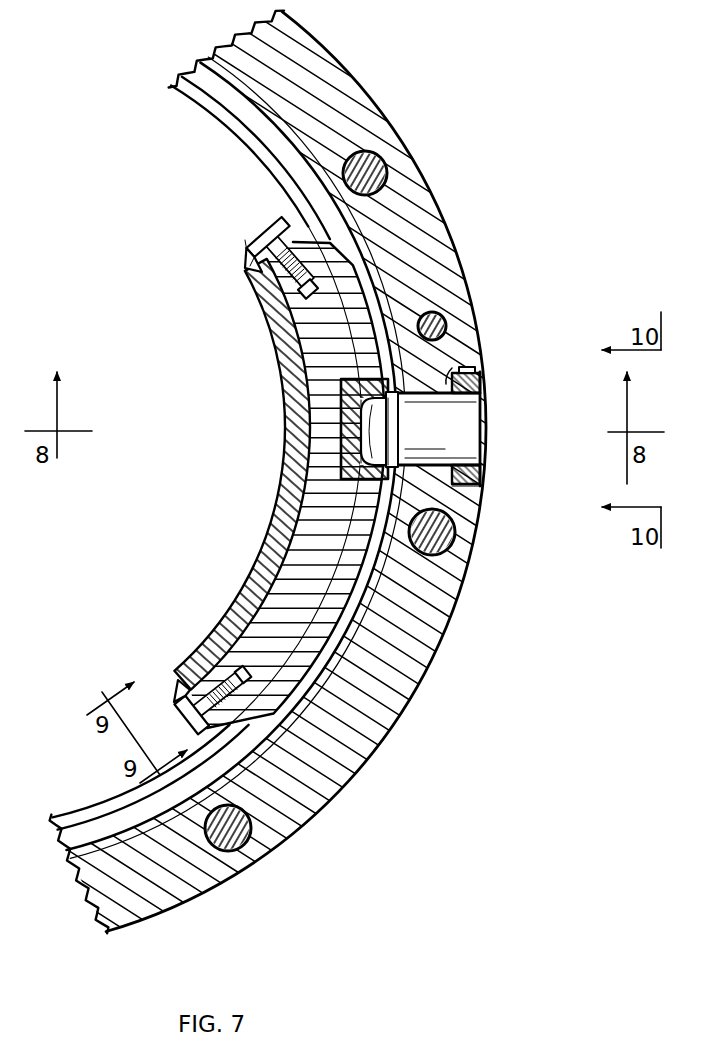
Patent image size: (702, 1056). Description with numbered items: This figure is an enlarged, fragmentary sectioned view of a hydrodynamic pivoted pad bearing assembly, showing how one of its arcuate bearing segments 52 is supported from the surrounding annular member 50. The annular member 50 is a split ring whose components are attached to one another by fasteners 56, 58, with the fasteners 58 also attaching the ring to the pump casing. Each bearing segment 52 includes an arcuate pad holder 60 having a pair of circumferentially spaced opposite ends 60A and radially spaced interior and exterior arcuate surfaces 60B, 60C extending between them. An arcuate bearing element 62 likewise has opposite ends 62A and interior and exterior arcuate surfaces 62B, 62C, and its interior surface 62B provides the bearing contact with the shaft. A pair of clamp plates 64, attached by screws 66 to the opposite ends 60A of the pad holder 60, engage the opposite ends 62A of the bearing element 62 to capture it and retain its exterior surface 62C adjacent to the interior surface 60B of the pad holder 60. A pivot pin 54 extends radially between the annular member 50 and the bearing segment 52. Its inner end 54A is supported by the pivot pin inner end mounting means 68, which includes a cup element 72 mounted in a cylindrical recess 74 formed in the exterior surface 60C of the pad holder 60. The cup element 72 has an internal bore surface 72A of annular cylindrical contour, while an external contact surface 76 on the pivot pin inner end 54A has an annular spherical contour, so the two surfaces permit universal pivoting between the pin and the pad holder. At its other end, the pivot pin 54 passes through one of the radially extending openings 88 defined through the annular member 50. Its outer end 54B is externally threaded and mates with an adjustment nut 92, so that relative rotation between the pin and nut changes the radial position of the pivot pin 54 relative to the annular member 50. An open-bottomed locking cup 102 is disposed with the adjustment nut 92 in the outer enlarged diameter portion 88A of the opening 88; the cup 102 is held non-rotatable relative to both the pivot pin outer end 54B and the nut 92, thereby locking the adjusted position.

The annular member 50 is at (503, 472).
The arcuate bearing segment 52 is at (228, 598).
The pivot pin 54 is at (460, 438).
The inner end of pivot pin 54A is at (368, 446).
The outer end of pivot pin 54B is at (462, 413).
The fastener 56 is at (447, 370).
The fastener 58 is at (385, 165).
The arcuate pad holder 60 is at (376, 622).
The opposite ends of pad holder 60A is at (246, 237).
The interior arcuate surface of pad holder 60B is at (300, 483).
The exterior arcuate surface of pad holder 60C is at (397, 505).
The arcuate bearing element 62 is at (256, 578).
The opposite ends of bearing element 62A is at (250, 268).
The interior arcuate surface of bearing element 62B is at (300, 507).
The exterior arcuate surface of bearing element 62C is at (362, 421).
The clamp plate 64 is at (258, 232).
The screw 66 is at (300, 290).
The pivot pin inner end mounting means 68 is at (338, 392).
The cup element 72 is at (393, 480).
The internal bore surface of cup element 72A is at (343, 392).
The cylindrical recess 74 is at (342, 478).
The external contact surface 76 is at (360, 440).
The opening 88 is at (420, 314).
The outer enlarged diameter portion of opening 88A is at (484, 490).
The adjustment nut 92 is at (477, 370).
The locking cup 102 is at (470, 366).